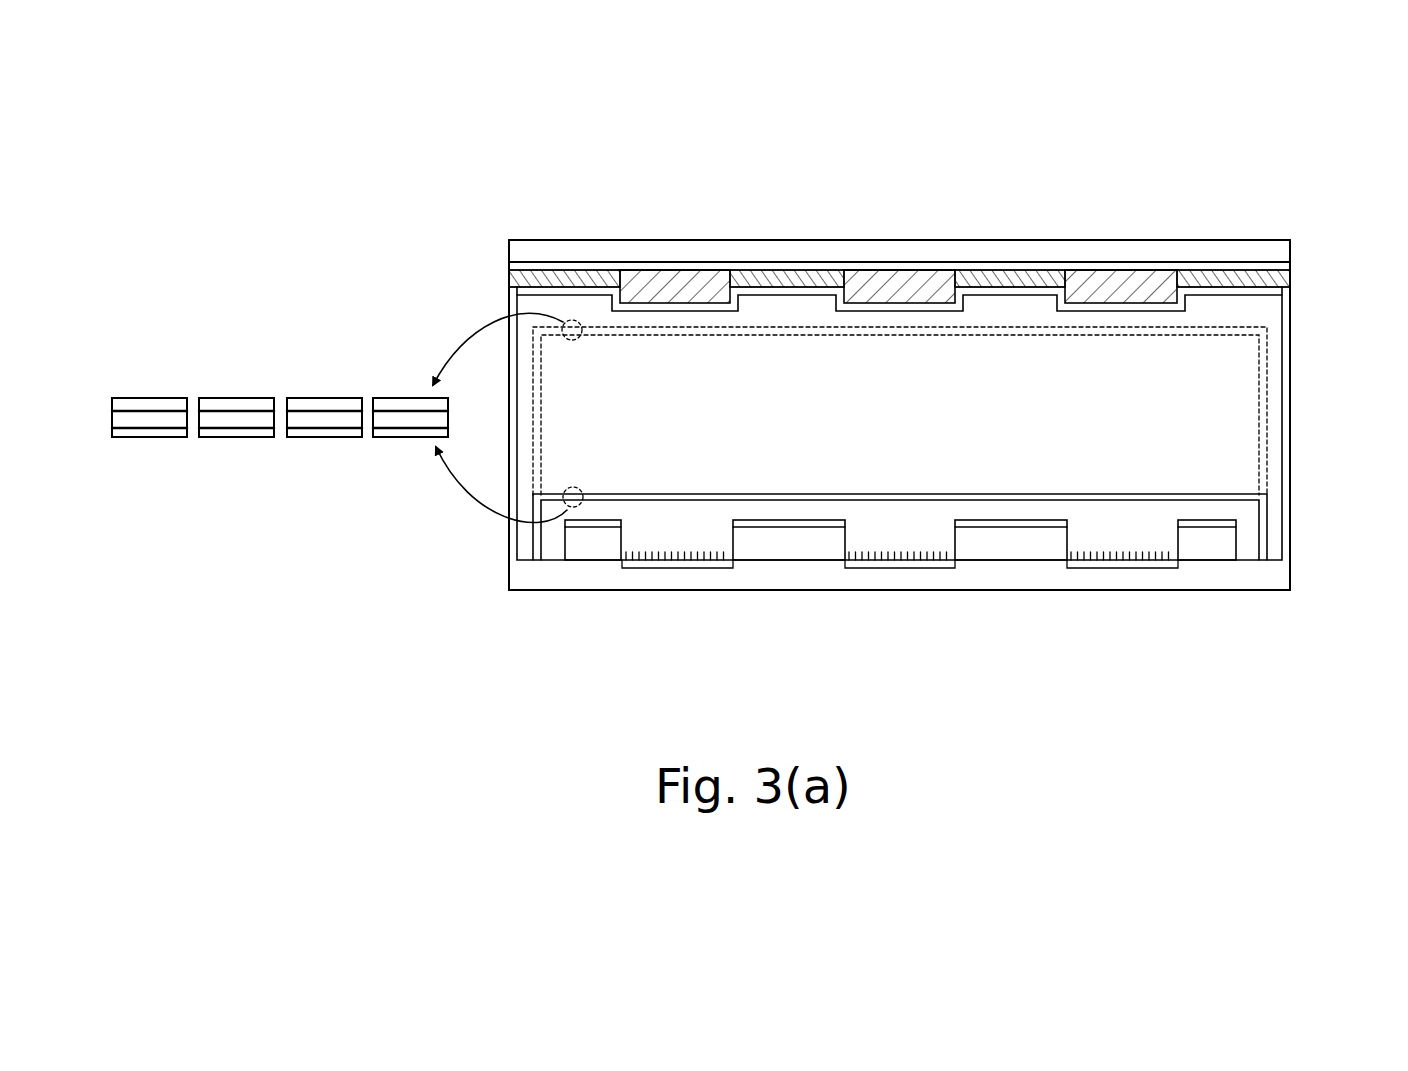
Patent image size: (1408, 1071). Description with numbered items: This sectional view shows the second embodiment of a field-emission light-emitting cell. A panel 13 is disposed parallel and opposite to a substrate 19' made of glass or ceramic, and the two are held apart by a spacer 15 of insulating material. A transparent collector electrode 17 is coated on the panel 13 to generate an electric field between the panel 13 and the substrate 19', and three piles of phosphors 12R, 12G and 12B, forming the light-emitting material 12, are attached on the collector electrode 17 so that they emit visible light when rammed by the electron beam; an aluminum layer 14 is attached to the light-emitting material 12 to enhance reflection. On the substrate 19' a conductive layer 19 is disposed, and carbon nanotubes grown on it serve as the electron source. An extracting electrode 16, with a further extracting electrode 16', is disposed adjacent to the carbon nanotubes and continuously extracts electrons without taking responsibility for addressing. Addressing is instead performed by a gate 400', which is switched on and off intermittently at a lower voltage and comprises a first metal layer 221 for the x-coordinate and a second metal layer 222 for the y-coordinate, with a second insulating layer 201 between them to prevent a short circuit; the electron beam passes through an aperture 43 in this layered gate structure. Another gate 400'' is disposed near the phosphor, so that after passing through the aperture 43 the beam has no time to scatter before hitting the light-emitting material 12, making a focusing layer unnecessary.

The light-emitting material 12 is at (1065, 115).
The red phosphor pile 12R is at (665, 287).
The green phosphor pile 12G is at (888, 290).
The blue phosphor pile 12B is at (1142, 290).
The panel 13 is at (1262, 252).
The aluminum layer 14 is at (1260, 292).
The spacer 15 is at (1285, 347).
The extracting electrode 16 is at (900, 607).
The electrode 16' is at (789, 612).
The collector electrode 17 is at (555, 268).
The conductive layer 19 is at (897, 614).
The substrate 19' is at (898, 623).
The gate 400' is at (900, 488).
The gate 400'' is at (900, 407).
The second insulating layer 201 is at (110, 415).
The first metal layer 221 is at (162, 432).
The second metal layer 222 is at (133, 404).
The aperture 43 is at (280, 398).